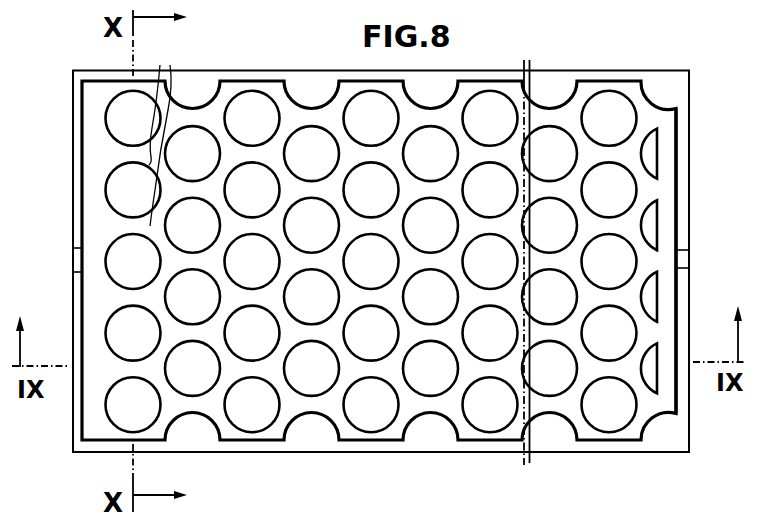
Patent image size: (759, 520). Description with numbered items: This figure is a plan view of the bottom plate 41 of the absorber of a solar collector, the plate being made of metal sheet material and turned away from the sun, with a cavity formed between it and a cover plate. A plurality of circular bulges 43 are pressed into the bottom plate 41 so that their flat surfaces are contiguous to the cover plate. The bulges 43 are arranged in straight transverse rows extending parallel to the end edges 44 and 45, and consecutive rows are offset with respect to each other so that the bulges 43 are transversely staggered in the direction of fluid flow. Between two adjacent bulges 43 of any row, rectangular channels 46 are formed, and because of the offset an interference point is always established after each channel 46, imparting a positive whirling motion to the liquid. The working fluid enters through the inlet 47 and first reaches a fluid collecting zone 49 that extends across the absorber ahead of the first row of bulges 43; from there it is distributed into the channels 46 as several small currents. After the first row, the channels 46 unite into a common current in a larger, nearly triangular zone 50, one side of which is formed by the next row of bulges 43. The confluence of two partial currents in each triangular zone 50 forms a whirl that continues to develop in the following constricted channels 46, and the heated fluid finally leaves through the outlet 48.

The bottom plate 41 is at (693, 104).
The circular bulges 43 is at (380, 126).
The end edge 44 is at (73, 150).
The end edge 45 is at (690, 163).
The channels 46 is at (128, 227).
The inlet 47 is at (78, 262).
The outlet 48 is at (680, 266).
The fluid collecting zone 49 is at (92, 92).
The triangular zone 50 is at (159, 135).